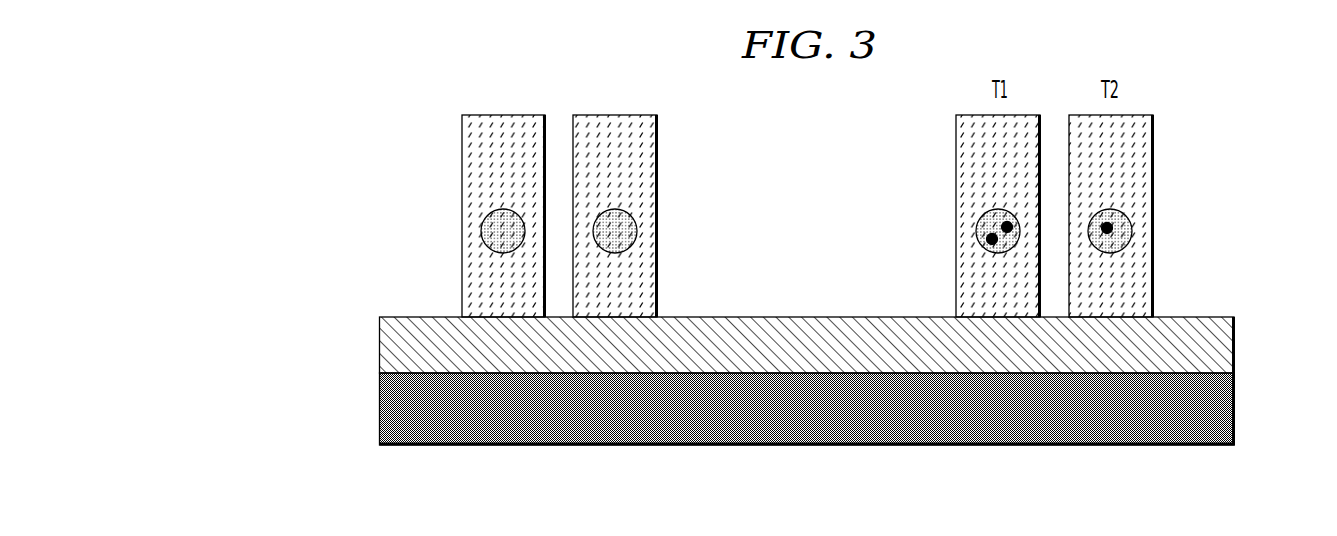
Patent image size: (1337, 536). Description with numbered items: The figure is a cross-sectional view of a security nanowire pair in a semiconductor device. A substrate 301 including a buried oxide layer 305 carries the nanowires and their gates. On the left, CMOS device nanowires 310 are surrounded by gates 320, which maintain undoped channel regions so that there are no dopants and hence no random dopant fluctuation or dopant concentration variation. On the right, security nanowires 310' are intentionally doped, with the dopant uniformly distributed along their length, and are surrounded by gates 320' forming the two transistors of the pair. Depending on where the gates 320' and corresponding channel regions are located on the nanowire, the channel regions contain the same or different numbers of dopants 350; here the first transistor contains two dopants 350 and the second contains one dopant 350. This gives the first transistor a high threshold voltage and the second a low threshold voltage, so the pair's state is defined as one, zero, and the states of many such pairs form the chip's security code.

The substrate 301 is at (1234, 407).
The buried oxide layer 305 is at (1234, 344).
The CMOS device nanowires 310 is at (559, 231).
The gates 320 is at (559, 216).
The security nanowires 310' is at (1059, 231).
The gates 320' is at (1059, 216).
The dopants 350 is at (991, 239).